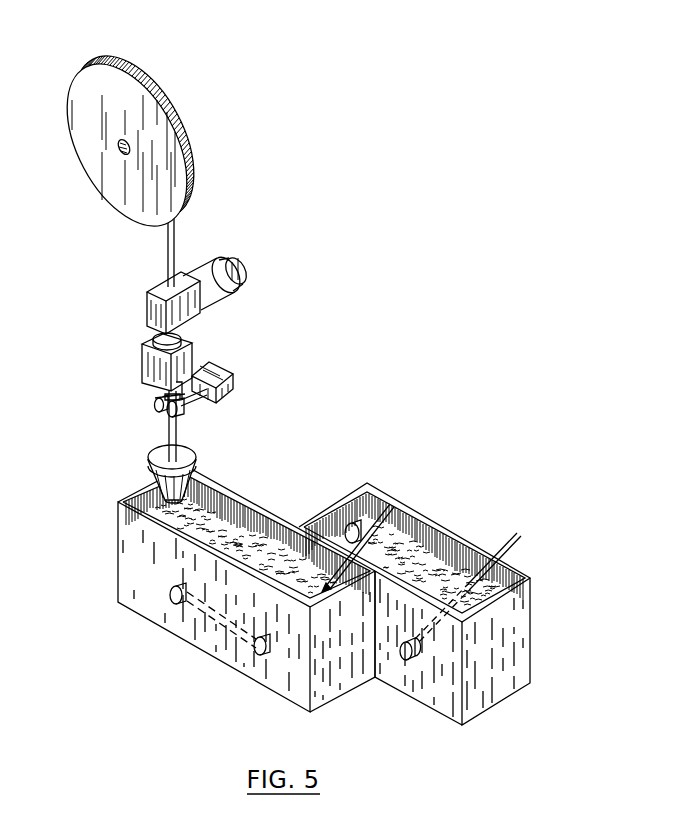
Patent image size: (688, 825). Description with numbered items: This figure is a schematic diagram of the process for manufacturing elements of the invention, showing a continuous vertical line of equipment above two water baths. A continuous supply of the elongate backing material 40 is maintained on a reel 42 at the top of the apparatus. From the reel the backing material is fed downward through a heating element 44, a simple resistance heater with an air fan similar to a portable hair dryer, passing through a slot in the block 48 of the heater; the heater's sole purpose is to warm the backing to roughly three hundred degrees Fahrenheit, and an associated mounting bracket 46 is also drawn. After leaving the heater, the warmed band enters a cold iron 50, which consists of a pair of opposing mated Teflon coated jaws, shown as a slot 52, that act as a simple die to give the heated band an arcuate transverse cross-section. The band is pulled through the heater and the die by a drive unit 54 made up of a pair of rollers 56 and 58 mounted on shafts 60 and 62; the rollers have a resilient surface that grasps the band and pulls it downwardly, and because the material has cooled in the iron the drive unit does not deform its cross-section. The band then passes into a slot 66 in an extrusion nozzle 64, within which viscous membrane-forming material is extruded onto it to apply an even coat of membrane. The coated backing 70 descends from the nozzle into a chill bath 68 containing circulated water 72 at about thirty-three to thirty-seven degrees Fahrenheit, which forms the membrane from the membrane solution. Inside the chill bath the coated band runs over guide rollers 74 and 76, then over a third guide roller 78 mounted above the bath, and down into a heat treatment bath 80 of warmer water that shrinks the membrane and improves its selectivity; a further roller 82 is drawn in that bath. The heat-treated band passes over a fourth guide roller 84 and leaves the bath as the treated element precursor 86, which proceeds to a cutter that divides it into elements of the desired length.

The backing material 40 is at (174, 238).
The reel 42 is at (178, 118).
The heating element 44 is at (224, 258).
The bracket 46 is at (160, 284).
The block 48 is at (152, 316).
The cold iron 50 is at (184, 362).
The slot 52 is at (186, 345).
The drive unit 54 is at (231, 390).
The roller 56 is at (155, 406).
The roller 58 is at (180, 421).
The shaft 60 is at (164, 391).
The shaft 62 is at (198, 404).
The extrusion nozzle 64 is at (119, 501).
The slot 66 is at (148, 466).
The chill bath 68 is at (148, 583).
The coated backing 70 is at (165, 518).
The circulated water 72 is at (210, 516).
The guide roller 74 is at (170, 606).
The guide roller 76 is at (263, 646).
The third guide roller 78 is at (392, 506).
The heat treatment bath 80 is at (500, 648).
The roller 82 is at (405, 545).
The fourth guide roller 84 is at (411, 661).
The treated element precursor 86 is at (518, 535).